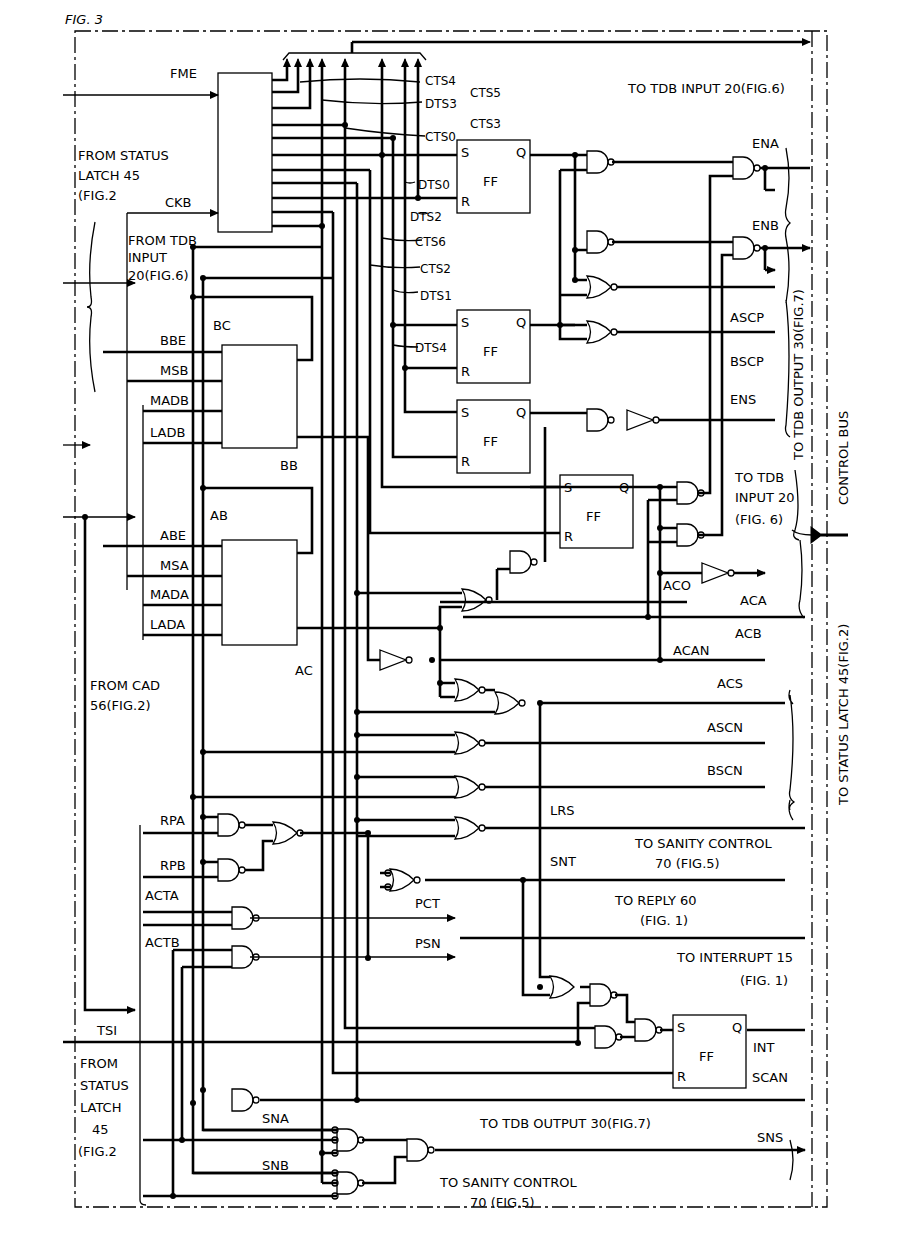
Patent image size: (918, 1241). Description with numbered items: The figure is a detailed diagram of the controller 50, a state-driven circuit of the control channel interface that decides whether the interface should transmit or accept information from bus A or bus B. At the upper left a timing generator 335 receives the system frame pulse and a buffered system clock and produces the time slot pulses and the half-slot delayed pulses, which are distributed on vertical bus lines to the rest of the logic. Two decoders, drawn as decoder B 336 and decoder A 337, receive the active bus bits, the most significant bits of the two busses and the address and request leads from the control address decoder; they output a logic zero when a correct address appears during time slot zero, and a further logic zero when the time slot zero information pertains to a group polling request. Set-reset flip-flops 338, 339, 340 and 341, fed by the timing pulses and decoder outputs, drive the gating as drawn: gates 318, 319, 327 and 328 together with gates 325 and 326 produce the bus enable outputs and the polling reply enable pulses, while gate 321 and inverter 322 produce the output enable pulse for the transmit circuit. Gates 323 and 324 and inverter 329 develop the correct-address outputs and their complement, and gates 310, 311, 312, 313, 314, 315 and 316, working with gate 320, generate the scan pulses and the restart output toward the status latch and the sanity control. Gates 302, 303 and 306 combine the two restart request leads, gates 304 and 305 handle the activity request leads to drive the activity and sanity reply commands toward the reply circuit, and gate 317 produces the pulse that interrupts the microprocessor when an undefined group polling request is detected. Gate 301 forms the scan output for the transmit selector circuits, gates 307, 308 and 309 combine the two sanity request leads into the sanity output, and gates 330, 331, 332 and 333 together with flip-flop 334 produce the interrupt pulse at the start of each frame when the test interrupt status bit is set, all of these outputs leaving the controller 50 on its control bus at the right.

The controller 50 is at (742, 32).
The NAND gate 301 is at (239, 1089).
The NAND gate 302 is at (222, 810).
The NAND gate 303 is at (249, 874).
The NAND gate 304 is at (253, 907).
The NAND gate 305 is at (253, 947).
The NOR gate 306 is at (280, 822).
The NAND gate 307 is at (354, 1128).
The NAND gate 308 is at (354, 1172).
The NAND gate 309 is at (418, 1138).
The NOR gate 310 is at (463, 588).
The inverter 311 is at (394, 670).
The NOR gate 312 is at (484, 682).
The NOR gate 313 is at (524, 692).
The NOR gate 314 is at (487, 737).
The NOR gate 315 is at (487, 780).
The NOR gate 316 is at (490, 821).
The gate 317 is at (415, 872).
The NAND gate 318 is at (595, 151).
The NAND gate 319 is at (603, 233).
The NAND gate 320 is at (535, 570).
The NAND gate 321 is at (593, 408).
The inverter 322 is at (640, 408).
The NAND gate 323 is at (683, 482).
The NAND gate 324 is at (688, 530).
The NAND gate 325 is at (741, 155).
The NAND gate 326 is at (741, 237).
The NOR gate 327 is at (610, 278).
The NOR gate 328 is at (610, 323).
The inverter 329 is at (723, 573).
The OR gate 330 is at (562, 1000).
The NAND gate 331 is at (593, 975).
The NAND gate 332 is at (645, 1012).
The NAND gate 333 is at (607, 1050).
The flip-flop 334 is at (711, 1015).
The timing generator 335 is at (225, 74).
The decoder B 336 is at (260, 345).
The decoder A 337 is at (260, 540).
The flip-flop 338 is at (525, 140).
The flip-flop 339 is at (495, 310).
The flip-flop 340 is at (530, 400).
The flip-flop 341 is at (582, 475).